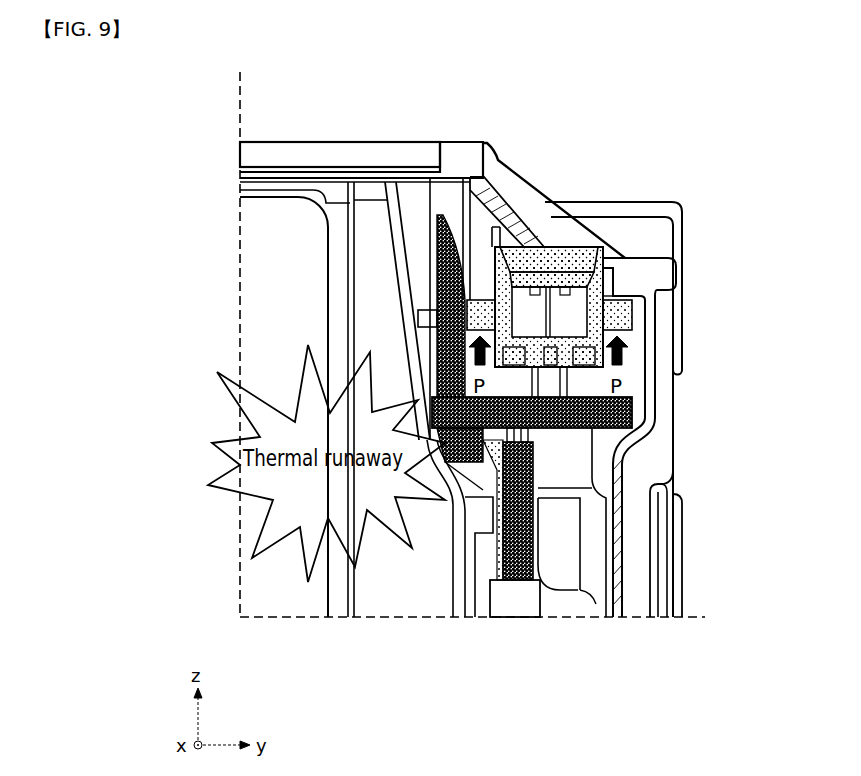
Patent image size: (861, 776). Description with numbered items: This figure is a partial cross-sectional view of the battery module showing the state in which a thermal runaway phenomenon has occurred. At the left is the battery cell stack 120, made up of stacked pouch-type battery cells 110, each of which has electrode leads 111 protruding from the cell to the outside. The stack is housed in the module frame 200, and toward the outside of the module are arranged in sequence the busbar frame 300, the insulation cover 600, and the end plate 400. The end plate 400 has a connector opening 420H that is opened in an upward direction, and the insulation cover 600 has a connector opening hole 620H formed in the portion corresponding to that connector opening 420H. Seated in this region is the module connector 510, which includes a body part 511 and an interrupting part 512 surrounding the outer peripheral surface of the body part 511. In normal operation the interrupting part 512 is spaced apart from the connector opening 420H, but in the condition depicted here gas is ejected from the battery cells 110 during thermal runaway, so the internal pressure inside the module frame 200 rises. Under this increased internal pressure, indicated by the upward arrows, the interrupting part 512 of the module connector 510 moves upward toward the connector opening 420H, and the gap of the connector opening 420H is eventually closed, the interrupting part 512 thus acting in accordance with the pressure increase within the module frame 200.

The battery cell 110 is at (262, 328).
The battery cell stack 120 is at (355, 397).
The electrode lead 111 is at (512, 622).
The module frame 200 is at (291, 148).
The busbar frame 300 is at (632, 410).
The end plate 400 is at (640, 580).
The connector opening 420H is at (483, 158).
The module connector 510 is at (773, 325).
The body part 511 is at (627, 322).
The interrupting part 512 is at (625, 302).
The insulation cover 600 is at (623, 520).
The connector opening hole 620H is at (473, 237).